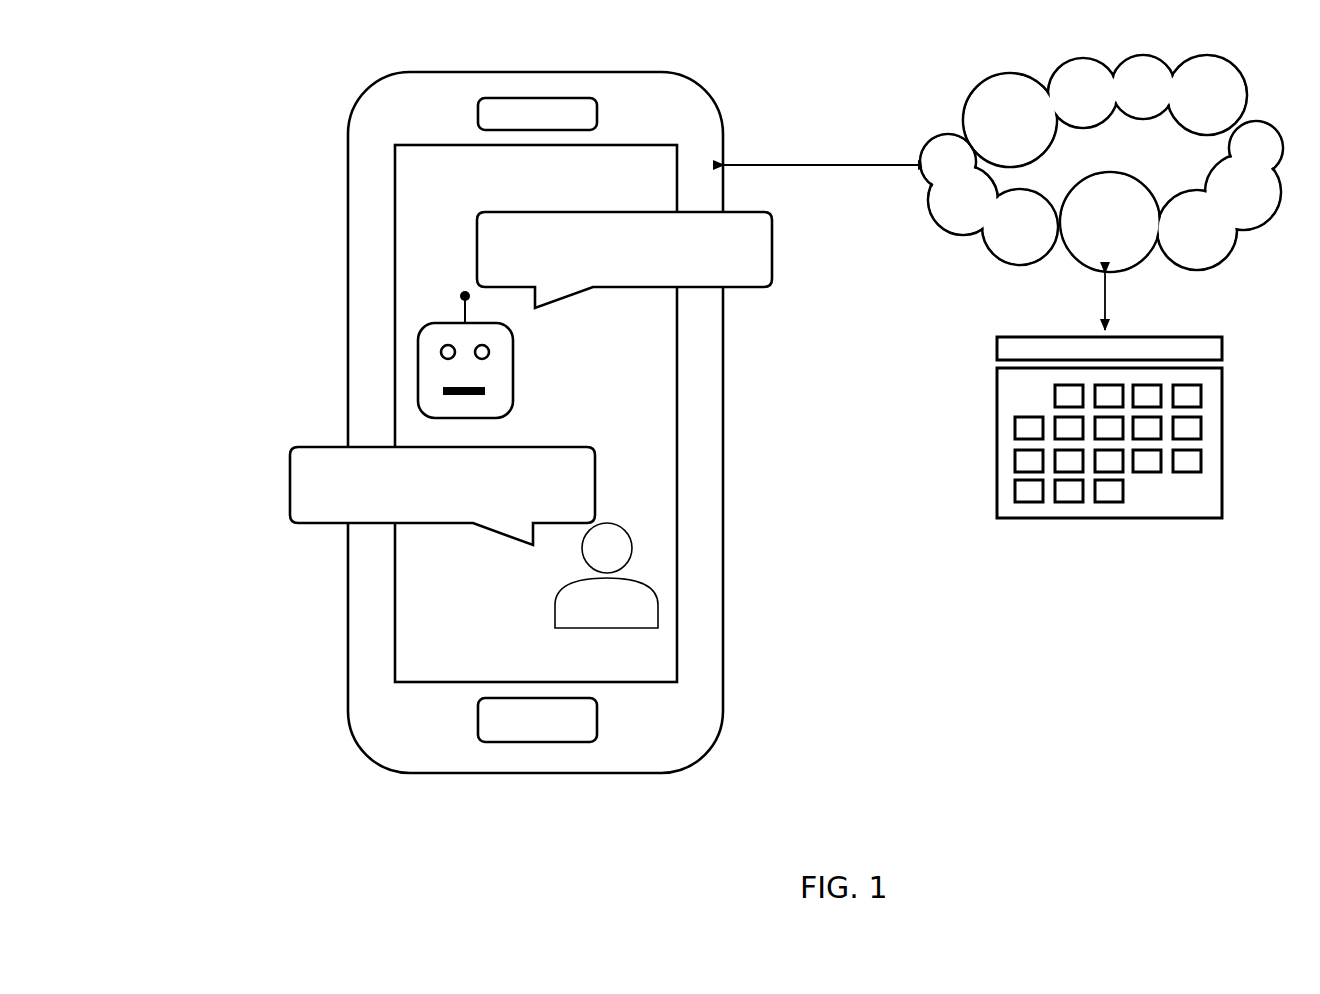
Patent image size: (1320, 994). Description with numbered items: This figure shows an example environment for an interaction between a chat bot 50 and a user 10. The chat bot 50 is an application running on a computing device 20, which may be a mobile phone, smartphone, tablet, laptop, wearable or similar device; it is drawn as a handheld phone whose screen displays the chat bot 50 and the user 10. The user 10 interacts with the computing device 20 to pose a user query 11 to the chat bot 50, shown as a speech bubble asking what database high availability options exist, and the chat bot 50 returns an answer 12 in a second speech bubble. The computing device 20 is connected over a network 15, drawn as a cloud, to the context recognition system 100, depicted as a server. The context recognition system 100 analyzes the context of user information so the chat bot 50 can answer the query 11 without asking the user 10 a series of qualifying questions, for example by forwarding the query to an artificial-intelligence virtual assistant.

The user 10 is at (623, 622).
The user query 11 is at (285, 487).
The answer 12 is at (477, 212).
The network 15 is at (1198, 181).
The computing device 20 is at (347, 178).
The chat bot 50 is at (418, 370).
The context recognition system 100 is at (997, 432).